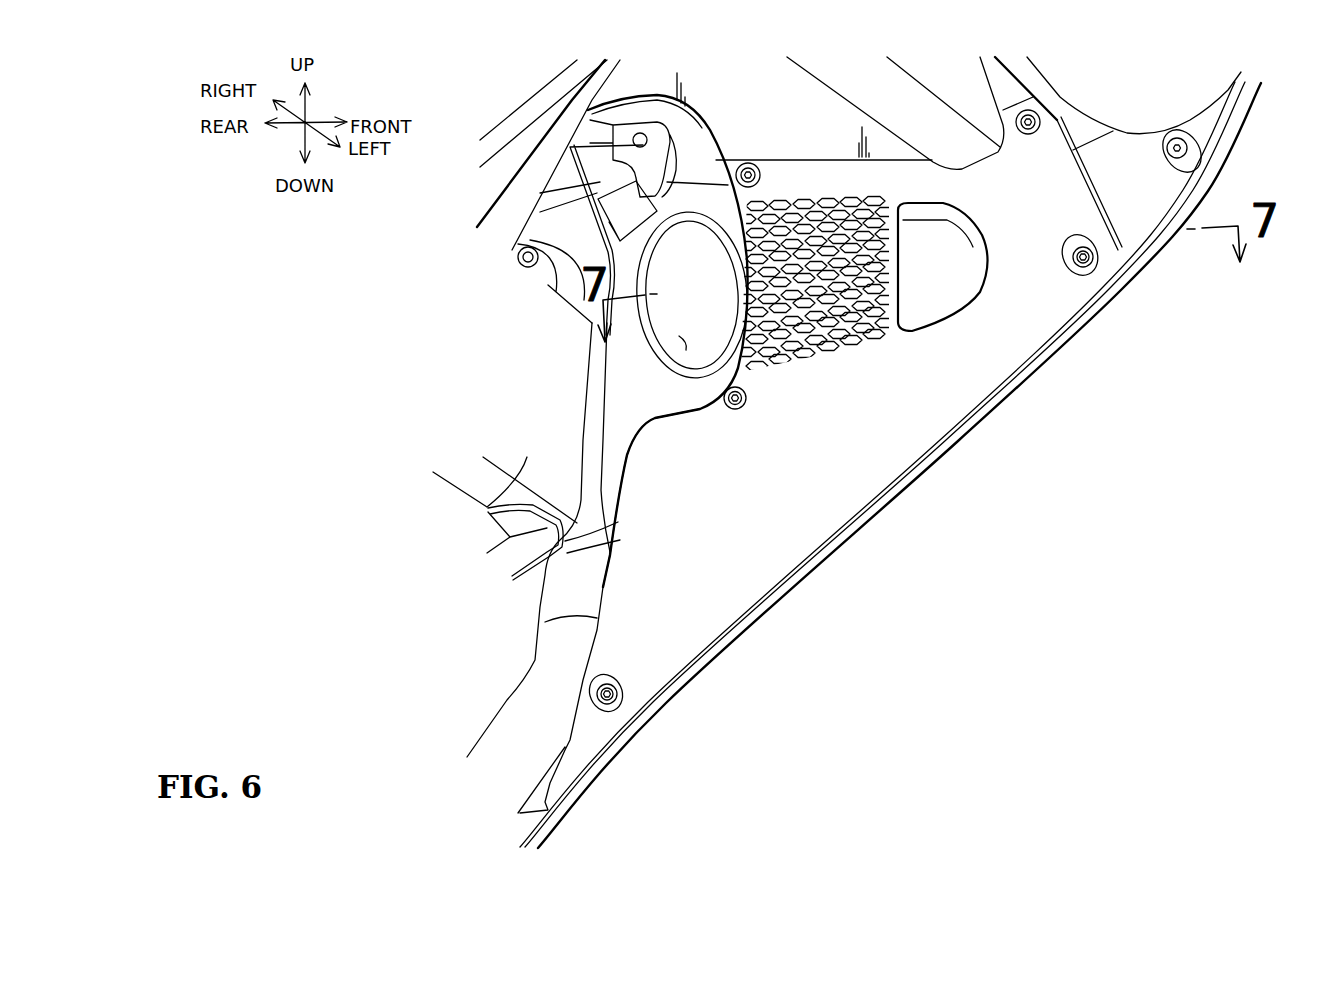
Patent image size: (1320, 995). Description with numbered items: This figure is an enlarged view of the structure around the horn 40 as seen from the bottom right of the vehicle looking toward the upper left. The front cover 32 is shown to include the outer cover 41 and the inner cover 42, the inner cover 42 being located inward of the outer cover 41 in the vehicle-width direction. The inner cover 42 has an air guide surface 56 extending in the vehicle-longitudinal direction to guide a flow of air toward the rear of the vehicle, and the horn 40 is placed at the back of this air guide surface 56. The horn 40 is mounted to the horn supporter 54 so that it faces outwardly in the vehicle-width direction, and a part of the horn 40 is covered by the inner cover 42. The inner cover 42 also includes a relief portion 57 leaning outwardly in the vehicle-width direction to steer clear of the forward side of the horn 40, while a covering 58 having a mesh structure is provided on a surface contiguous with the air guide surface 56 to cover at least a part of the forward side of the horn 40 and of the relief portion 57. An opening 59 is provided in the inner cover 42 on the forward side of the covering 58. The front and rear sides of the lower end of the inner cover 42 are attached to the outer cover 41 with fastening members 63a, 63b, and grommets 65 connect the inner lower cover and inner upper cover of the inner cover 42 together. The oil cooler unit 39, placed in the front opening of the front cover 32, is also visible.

The front cover 32 is at (897, 517).
The oil cooler unit 39 is at (487, 507).
The horn 40 is at (684, 350).
The outer cover 41 is at (948, 405).
The inner cover 42 is at (900, 400).
The horn supporter 54 is at (655, 215).
The air guide surface 56 is at (1027, 280).
The relief portion 57 is at (927, 273).
The covering 58 is at (817, 337).
The opening 59 is at (958, 290).
The fastening member 63a is at (1090, 272).
The fastening member 63b is at (612, 704).
The grommet 65 is at (748, 170).